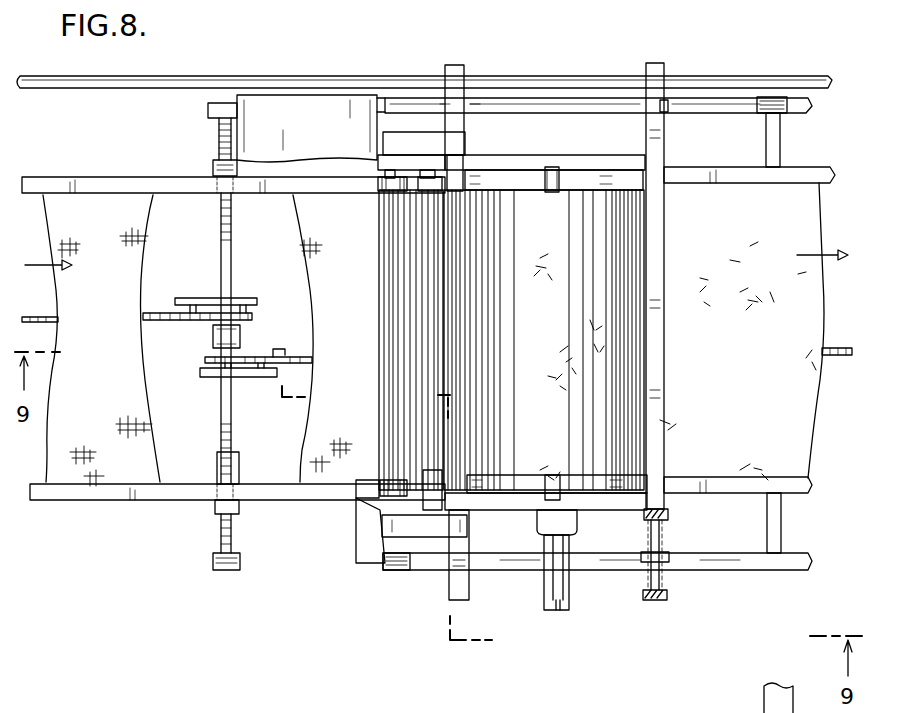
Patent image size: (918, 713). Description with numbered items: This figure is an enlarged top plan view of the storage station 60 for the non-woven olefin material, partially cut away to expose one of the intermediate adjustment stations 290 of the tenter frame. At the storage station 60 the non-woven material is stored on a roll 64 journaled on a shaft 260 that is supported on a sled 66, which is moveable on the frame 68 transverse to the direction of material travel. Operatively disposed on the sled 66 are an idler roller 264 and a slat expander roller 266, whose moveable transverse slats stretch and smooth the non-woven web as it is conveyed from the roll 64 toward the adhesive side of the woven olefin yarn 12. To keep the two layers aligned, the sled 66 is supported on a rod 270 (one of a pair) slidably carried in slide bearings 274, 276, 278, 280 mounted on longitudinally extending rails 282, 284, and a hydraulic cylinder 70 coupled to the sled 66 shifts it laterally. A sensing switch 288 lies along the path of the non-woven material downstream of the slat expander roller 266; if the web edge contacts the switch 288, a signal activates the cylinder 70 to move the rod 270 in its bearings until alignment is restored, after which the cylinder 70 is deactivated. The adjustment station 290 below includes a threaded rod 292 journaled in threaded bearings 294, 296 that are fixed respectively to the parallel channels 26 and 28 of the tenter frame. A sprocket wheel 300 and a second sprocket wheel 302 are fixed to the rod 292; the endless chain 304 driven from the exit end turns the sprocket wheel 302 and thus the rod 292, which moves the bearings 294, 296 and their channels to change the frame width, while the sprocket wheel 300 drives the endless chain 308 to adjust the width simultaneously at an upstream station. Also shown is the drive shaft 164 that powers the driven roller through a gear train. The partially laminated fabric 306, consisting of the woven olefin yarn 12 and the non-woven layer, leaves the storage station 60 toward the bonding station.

The woven olefin yarn 12 is at (48, 455).
The channel 26 is at (97, 502).
The channel 28 is at (36, 178).
The storage station 60 is at (640, 36).
The roll 64 is at (556, 366).
The sled 66 is at (662, 370).
The frame 68 is at (398, 572).
The hydraulic cylinder 70 is at (562, 578).
The drive shaft 164 is at (152, 88).
The shaft 260 is at (560, 180).
The idler roller 264 is at (430, 294).
The slat expander roller 266 is at (380, 194).
The rod 270 is at (661, 541).
The slide bearing 274 is at (670, 562).
The slide bearing 276 is at (446, 562).
The slide bearing 278 is at (667, 111).
The slide bearing 280 is at (470, 110).
The rail 282 is at (637, 572).
The rail 284 is at (740, 114).
The sensing switch 288 is at (360, 498).
The intermediate adjustment station 290 is at (197, 356).
The threaded rod 292 is at (220, 431).
The threaded bearing 294 is at (214, 510).
The threaded bearing 296 is at (213, 170).
The sprocket wheel 300 is at (252, 317).
The second sprocket wheel 302 is at (208, 374).
The endless chain 304 is at (306, 371).
The partially laminated fabric 306 is at (810, 320).
The endless chain 308 is at (42, 304).